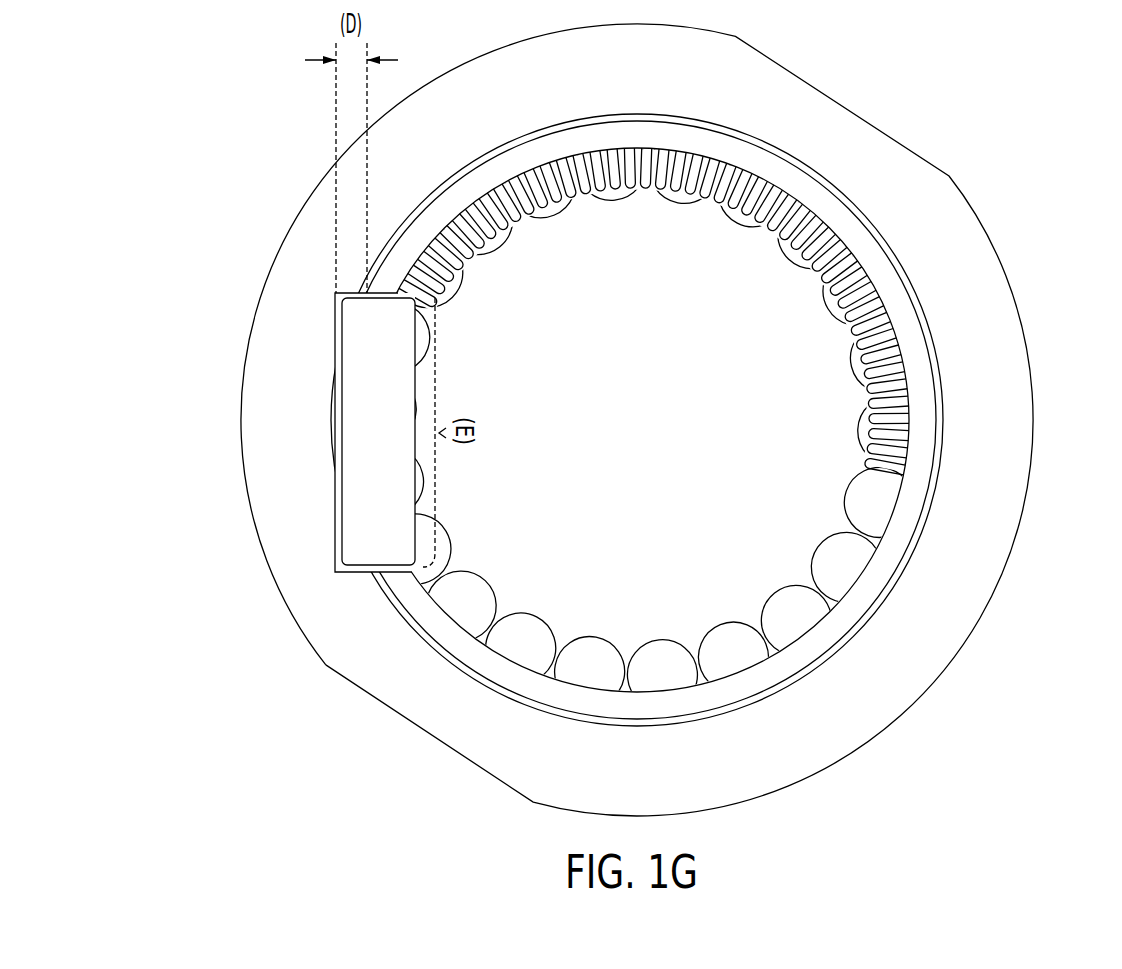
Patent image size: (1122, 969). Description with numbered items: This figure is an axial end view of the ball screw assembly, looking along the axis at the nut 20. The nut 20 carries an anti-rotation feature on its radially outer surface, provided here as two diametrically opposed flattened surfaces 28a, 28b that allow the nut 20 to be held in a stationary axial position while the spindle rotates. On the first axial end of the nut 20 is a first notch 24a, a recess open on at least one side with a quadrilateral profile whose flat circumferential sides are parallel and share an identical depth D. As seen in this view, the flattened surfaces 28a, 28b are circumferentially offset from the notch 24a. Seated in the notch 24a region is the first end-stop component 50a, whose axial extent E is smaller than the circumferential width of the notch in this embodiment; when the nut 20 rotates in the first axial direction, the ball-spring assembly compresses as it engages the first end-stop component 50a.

The nut 20 is at (677, 420).
The first notch 24a is at (340, 372).
The flattened surface 28a is at (885, 134).
The flattened surface 28b is at (410, 723).
The first end-stop component 50a is at (363, 543).